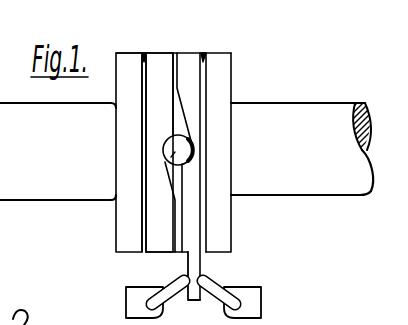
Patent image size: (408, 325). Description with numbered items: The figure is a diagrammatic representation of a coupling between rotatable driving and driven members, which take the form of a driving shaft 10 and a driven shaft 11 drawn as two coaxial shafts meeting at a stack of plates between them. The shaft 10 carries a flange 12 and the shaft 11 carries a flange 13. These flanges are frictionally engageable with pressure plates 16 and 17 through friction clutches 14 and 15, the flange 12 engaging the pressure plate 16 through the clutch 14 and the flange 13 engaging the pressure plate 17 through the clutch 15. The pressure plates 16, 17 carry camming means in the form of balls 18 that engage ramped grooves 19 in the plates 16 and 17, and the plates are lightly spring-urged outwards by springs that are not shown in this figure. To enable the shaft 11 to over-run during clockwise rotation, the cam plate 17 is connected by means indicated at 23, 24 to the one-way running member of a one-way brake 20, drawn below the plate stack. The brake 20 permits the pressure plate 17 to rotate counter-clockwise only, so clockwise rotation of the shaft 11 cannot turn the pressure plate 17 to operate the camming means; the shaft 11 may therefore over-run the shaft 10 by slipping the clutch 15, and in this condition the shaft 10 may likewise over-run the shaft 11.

The shaft 10 is at (32, 178).
The shaft 11 is at (310, 150).
The flange 12 is at (128, 75).
The flange 13 is at (218, 100).
The friction clutch 14 is at (144, 60).
The friction clutch 15 is at (203, 60).
The pressure plate 16 is at (165, 78).
The pressure plate 17 is at (191, 101).
The balls 18 is at (164, 164).
The ramped grooves 19 is at (191, 138).
The one-way brake 20 is at (126, 294).
The connecting means 23 is at (193, 268).
The connecting means 24 is at (235, 261).